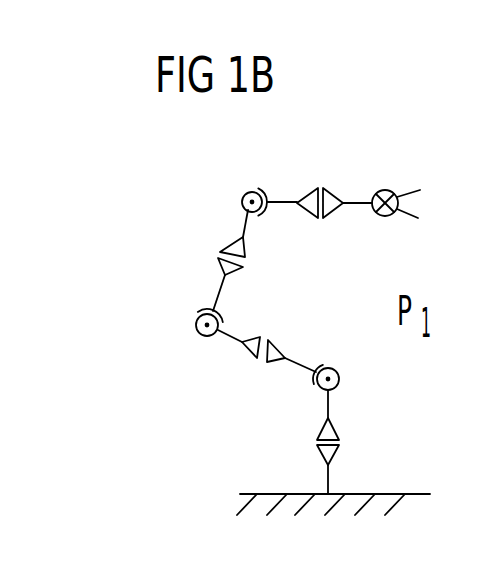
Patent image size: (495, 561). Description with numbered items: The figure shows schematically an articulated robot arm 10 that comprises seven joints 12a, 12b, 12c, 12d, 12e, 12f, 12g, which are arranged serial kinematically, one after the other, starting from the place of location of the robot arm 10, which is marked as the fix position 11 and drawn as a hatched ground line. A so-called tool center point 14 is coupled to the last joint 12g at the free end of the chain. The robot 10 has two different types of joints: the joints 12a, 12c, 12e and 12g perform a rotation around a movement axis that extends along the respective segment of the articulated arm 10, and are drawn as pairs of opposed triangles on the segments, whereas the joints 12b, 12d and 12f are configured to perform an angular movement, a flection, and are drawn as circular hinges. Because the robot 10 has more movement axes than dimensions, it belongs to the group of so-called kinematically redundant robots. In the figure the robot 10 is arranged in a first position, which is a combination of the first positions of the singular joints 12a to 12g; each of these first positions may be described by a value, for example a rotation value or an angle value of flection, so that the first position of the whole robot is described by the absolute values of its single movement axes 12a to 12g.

The articulated robot arm 10 is at (408, 178).
The fix position 11 is at (282, 492).
The joint 12a is at (340, 442).
The joint 12b is at (339, 379).
The joint 12c is at (267, 337).
The joint 12d is at (205, 337).
The joint 12e is at (220, 250).
The joint 12f is at (238, 194).
The joint 12g is at (318, 190).
The tool center point 14 is at (388, 217).